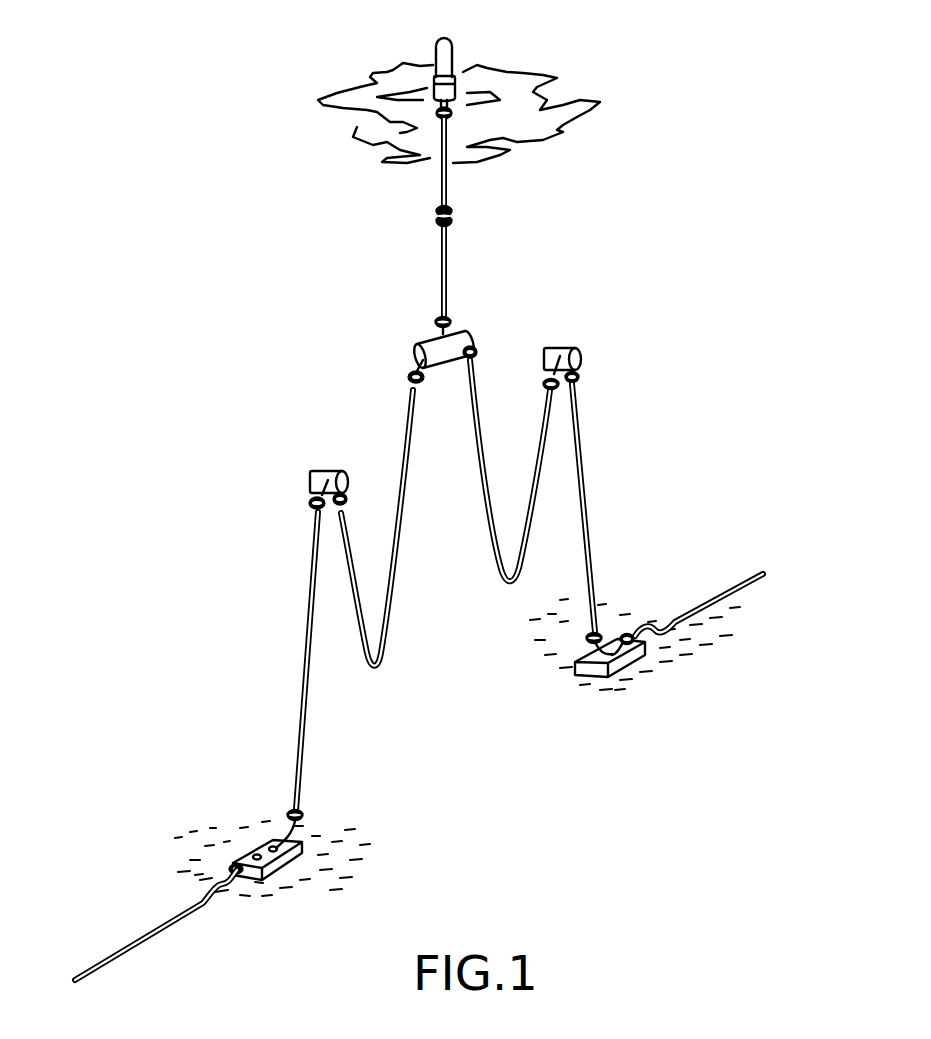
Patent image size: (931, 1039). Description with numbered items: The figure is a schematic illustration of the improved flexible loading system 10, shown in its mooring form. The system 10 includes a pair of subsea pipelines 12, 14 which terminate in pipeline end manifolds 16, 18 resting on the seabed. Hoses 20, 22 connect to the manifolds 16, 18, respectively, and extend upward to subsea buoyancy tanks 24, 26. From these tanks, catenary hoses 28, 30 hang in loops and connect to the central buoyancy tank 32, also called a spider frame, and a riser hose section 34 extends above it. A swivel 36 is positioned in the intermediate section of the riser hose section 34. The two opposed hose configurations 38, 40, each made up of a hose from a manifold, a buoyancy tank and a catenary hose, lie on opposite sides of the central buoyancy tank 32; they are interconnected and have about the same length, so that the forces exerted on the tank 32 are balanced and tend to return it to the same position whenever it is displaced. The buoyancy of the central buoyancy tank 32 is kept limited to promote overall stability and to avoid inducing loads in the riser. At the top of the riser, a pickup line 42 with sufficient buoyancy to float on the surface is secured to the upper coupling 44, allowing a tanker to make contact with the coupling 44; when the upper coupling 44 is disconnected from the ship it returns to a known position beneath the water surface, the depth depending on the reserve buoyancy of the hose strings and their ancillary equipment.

The flexible loading system 10 is at (248, 580).
The subsea pipeline 12 is at (129, 943).
The subsea pipeline 14 is at (755, 580).
The pipeline end manifold 16 is at (257, 853).
The pipeline end manifold 18 is at (628, 660).
The hose 20 is at (299, 718).
The hose 22 is at (590, 528).
The subsea buoyancy tank 24 is at (307, 477).
The subsea buoyancy tank 26 is at (580, 353).
The catenary hose 28 is at (369, 668).
The catenary hose 30 is at (504, 592).
The central buoyancy tank 32 is at (420, 346).
The riser hose section 34 is at (448, 254).
The swivel 36 is at (451, 211).
The hose configuration 38 is at (358, 418).
The hose configuration 40 is at (642, 436).
The pickup line 42 is at (452, 40).
The upper coupling 44 is at (433, 56).